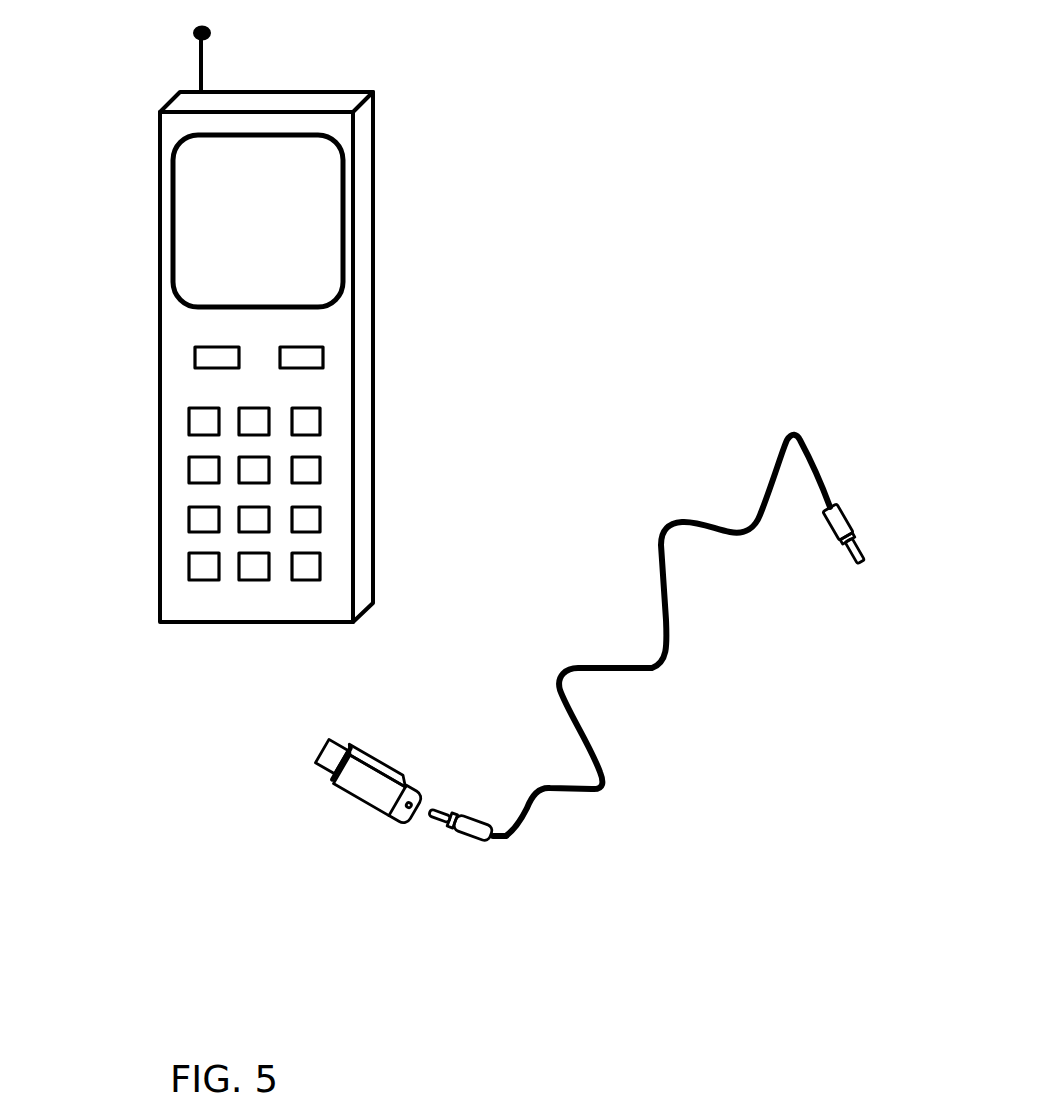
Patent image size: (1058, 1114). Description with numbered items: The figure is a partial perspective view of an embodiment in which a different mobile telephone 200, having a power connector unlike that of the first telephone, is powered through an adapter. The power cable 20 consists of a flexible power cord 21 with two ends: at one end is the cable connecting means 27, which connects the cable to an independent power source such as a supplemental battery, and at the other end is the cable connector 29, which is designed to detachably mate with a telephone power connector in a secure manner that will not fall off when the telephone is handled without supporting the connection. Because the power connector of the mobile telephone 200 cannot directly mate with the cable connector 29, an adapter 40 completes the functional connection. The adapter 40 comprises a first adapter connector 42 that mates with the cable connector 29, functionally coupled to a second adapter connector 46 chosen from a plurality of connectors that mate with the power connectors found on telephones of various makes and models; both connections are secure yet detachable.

The mobile telephone 200 is at (132, 366).
The power cable 20 is at (659, 675).
The flexible power cord 21 is at (642, 673).
The cable connecting means 27 is at (860, 512).
The cable connector 29 is at (452, 823).
The adapter 40 is at (384, 785).
The first adapter connector 42 is at (423, 790).
The second adapter connector 46 is at (365, 746).